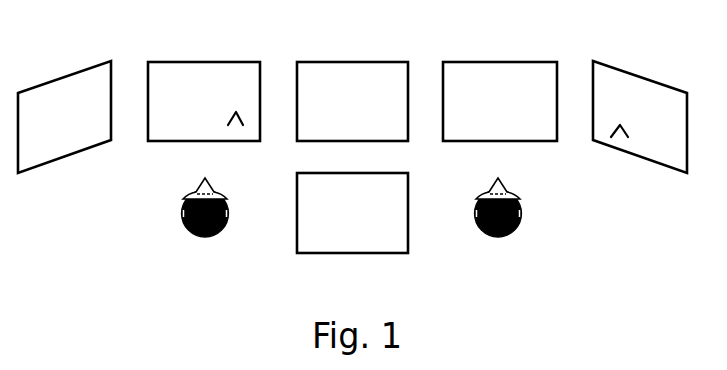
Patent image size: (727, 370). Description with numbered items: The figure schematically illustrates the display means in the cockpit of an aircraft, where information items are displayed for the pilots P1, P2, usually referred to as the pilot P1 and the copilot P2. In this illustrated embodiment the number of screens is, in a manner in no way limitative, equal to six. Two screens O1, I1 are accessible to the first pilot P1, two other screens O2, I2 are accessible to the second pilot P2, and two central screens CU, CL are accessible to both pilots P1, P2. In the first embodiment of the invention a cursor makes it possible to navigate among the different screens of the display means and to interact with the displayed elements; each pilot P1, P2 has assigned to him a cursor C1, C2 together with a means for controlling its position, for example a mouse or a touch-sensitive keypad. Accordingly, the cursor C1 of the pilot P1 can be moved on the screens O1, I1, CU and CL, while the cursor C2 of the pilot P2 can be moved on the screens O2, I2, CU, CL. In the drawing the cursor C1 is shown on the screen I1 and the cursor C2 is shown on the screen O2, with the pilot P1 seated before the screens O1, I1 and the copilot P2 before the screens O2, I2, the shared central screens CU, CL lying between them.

The screen O1 is at (64, 117).
The screen I1 is at (204, 101).
The central screen CU is at (352, 101).
The screen I2 is at (500, 101).
The central screen CL is at (352, 213).
The screen O2 is at (640, 117).
The cursor C1 is at (234, 95).
The cursor C2 is at (620, 128).
The pilot P1 is at (223, 205).
The copilot P2 is at (518, 205).